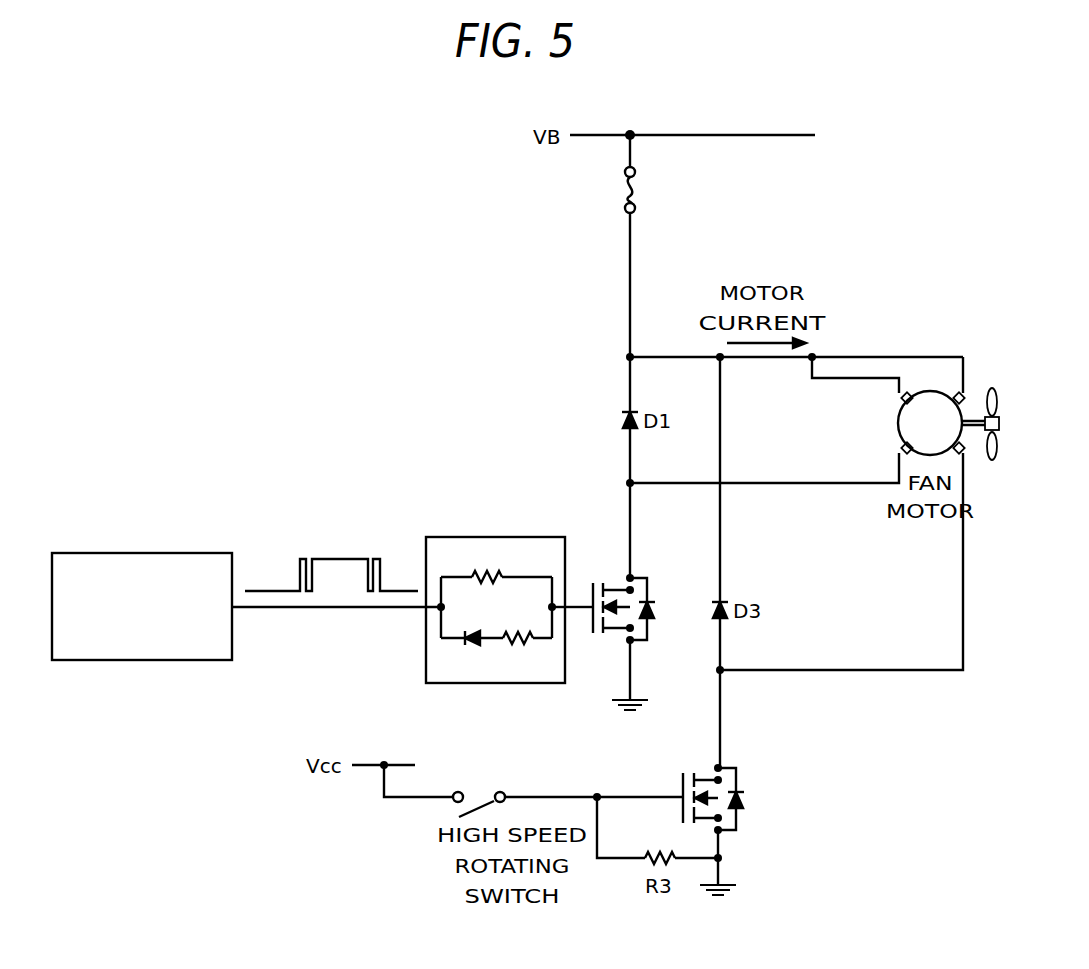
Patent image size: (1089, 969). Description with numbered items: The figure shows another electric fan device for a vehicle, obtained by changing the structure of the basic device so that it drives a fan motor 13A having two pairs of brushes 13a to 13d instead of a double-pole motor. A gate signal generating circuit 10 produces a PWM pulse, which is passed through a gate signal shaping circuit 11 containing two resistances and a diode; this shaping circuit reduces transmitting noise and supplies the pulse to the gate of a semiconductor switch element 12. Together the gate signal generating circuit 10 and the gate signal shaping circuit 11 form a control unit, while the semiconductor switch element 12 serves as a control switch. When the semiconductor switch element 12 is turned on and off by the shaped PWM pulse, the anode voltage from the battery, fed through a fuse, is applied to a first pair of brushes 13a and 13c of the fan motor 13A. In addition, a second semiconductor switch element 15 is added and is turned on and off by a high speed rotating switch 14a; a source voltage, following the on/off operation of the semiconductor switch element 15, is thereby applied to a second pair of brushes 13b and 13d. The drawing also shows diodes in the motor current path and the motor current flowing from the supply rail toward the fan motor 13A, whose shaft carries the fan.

The gate signal generating circuit 10 is at (148, 553).
The gate signal shaping circuit 11 is at (498, 537).
The semiconductor switch element 12 is at (628, 578).
The fan motor 13A is at (964, 372).
The brush 13a is at (962, 410).
The brush 13b is at (962, 442).
The brush 13c is at (900, 442).
The brush 13d is at (905, 392).
The high speed rotating switch 14a is at (448, 808).
The semiconductor switch element 15 is at (750, 800).